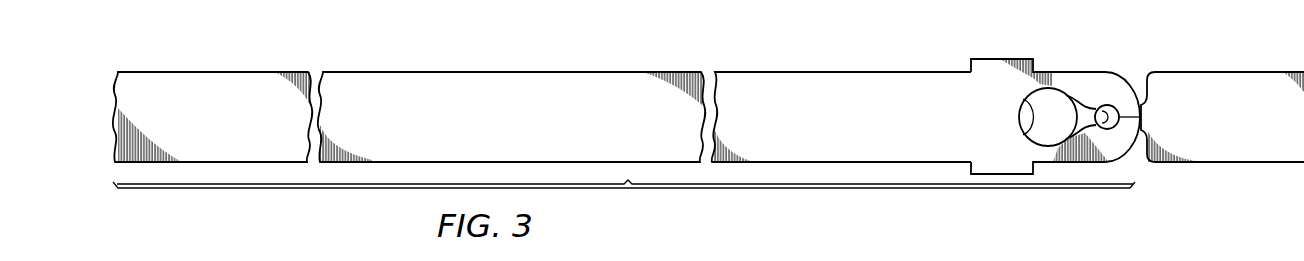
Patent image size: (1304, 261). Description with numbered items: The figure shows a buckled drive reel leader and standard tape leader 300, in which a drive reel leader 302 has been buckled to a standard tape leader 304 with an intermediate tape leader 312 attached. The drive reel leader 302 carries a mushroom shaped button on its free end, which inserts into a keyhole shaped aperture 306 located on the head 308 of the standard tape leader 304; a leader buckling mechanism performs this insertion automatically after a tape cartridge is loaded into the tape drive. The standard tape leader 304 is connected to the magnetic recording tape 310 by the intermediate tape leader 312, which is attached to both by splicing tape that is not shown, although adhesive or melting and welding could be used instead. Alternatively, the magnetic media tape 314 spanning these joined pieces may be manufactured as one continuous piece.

The buckled drive reel leader and standard tape leader 300 is at (572, 46).
The drive reel leader 302 is at (1253, 72).
The standard tape leader 304 is at (779, 72).
The keyhole shaped aperture 306 is at (1020, 128).
The head 308 is at (1062, 72).
The magnetic recording tape 310 is at (207, 72).
The intermediate tape leader 312 is at (457, 72).
The magnetic media tape 314 is at (624, 201).